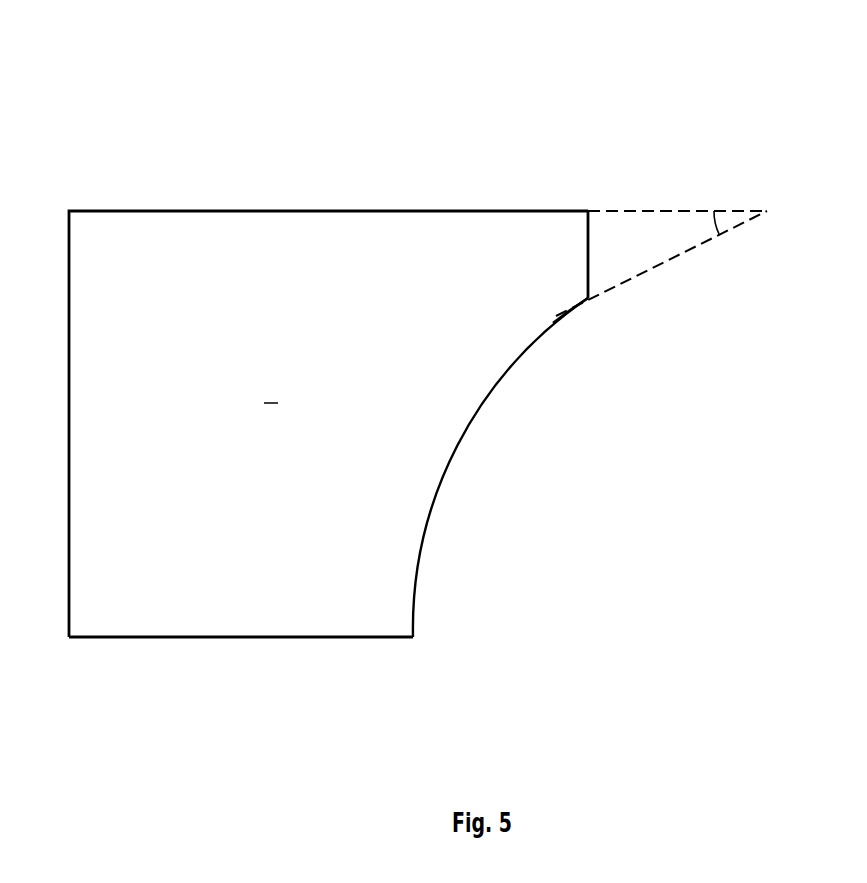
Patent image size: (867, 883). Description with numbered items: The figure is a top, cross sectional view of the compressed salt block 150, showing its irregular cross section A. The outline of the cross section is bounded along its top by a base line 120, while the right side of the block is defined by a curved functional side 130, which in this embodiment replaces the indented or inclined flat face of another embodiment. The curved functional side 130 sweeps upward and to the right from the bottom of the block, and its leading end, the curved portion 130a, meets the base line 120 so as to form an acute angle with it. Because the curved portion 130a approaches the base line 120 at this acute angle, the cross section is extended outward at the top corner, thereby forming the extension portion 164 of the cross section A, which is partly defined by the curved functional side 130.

The blade assembly / cross-sectional profile 150 is at (517, 131).
The base line 120 is at (285, 211).
The extension portion 164 is at (553, 257).
The curved functional side 130 is at (453, 458).
The curved portion 130a is at (553, 323).